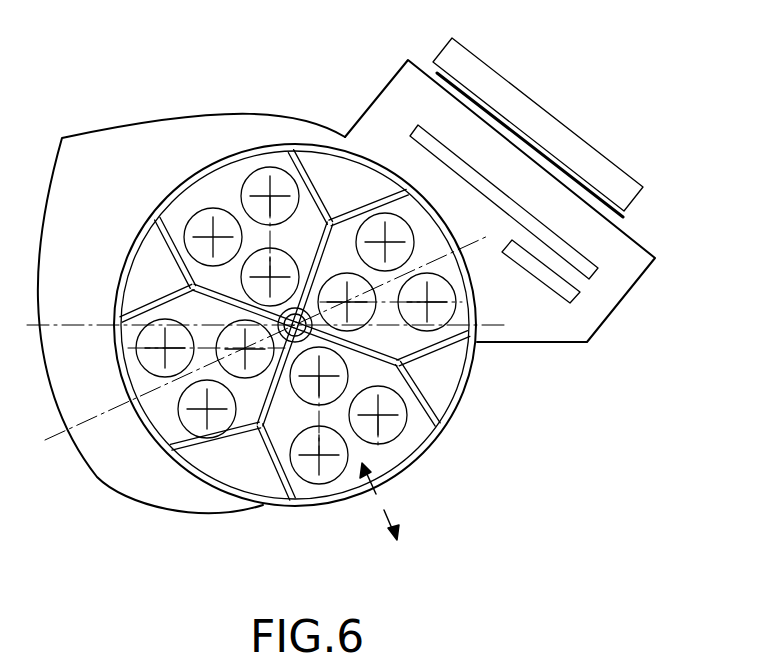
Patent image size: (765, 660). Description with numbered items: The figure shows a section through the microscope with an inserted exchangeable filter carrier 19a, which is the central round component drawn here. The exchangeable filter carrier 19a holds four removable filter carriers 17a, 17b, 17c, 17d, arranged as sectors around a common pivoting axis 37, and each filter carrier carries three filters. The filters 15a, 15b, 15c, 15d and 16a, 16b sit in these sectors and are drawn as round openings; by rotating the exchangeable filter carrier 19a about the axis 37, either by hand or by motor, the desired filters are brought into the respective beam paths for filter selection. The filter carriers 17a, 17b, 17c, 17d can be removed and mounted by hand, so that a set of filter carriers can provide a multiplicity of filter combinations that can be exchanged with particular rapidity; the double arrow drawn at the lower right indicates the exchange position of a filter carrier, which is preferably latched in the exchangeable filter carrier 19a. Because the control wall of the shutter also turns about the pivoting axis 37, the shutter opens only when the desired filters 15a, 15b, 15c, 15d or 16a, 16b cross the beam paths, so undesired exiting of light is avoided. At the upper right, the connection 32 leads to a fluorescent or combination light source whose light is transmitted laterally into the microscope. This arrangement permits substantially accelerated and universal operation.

The filter 15a is at (143, 352).
The filter 15b is at (228, 333).
The filter 15c is at (348, 372).
The filter 15d is at (323, 482).
The filter 16a is at (191, 424).
The filter 16b is at (398, 434).
The filter carrier 17a is at (393, 460).
The filter carrier 17b is at (182, 443).
The filter carrier 17c is at (193, 198).
The filter carrier 17d is at (345, 243).
The exchangeable filter carrier 19a is at (283, 508).
The connection to a light source 32 is at (594, 163).
The pivoting axis 37 is at (310, 321).